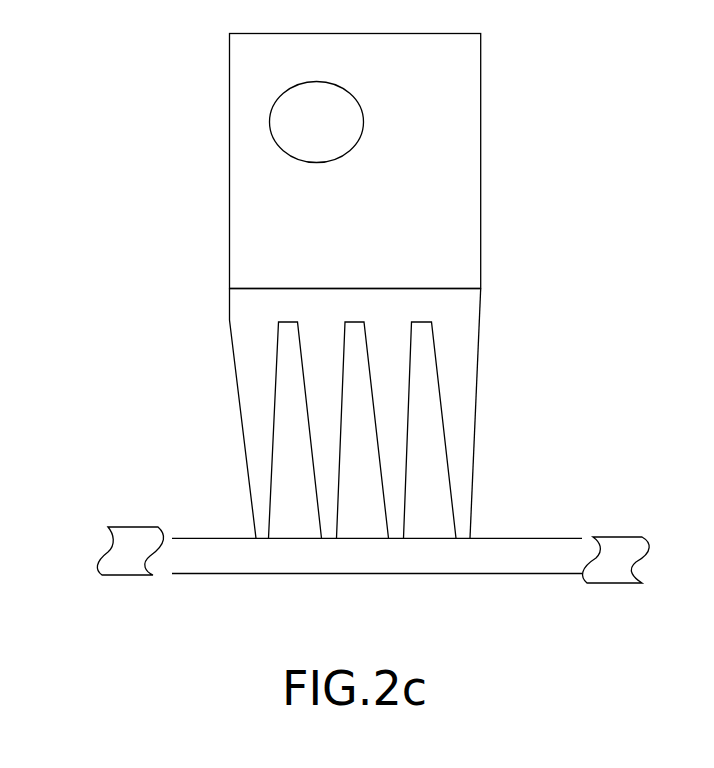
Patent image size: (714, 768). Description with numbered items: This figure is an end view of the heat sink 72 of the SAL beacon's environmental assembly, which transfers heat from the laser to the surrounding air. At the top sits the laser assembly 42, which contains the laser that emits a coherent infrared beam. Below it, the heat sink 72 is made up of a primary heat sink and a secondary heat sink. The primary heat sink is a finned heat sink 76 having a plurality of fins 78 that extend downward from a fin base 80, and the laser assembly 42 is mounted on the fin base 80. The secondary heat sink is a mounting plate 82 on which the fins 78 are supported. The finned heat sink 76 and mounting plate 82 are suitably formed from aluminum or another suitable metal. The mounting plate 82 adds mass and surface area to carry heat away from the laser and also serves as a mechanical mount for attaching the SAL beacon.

The laser assembly 42 is at (230, 158).
The heat sink 72 is at (78, 290).
The finned heat sink 76 is at (207, 353).
The fins 78 is at (462, 420).
The fin base 80 is at (465, 305).
The mounting plate 82 is at (501, 540).